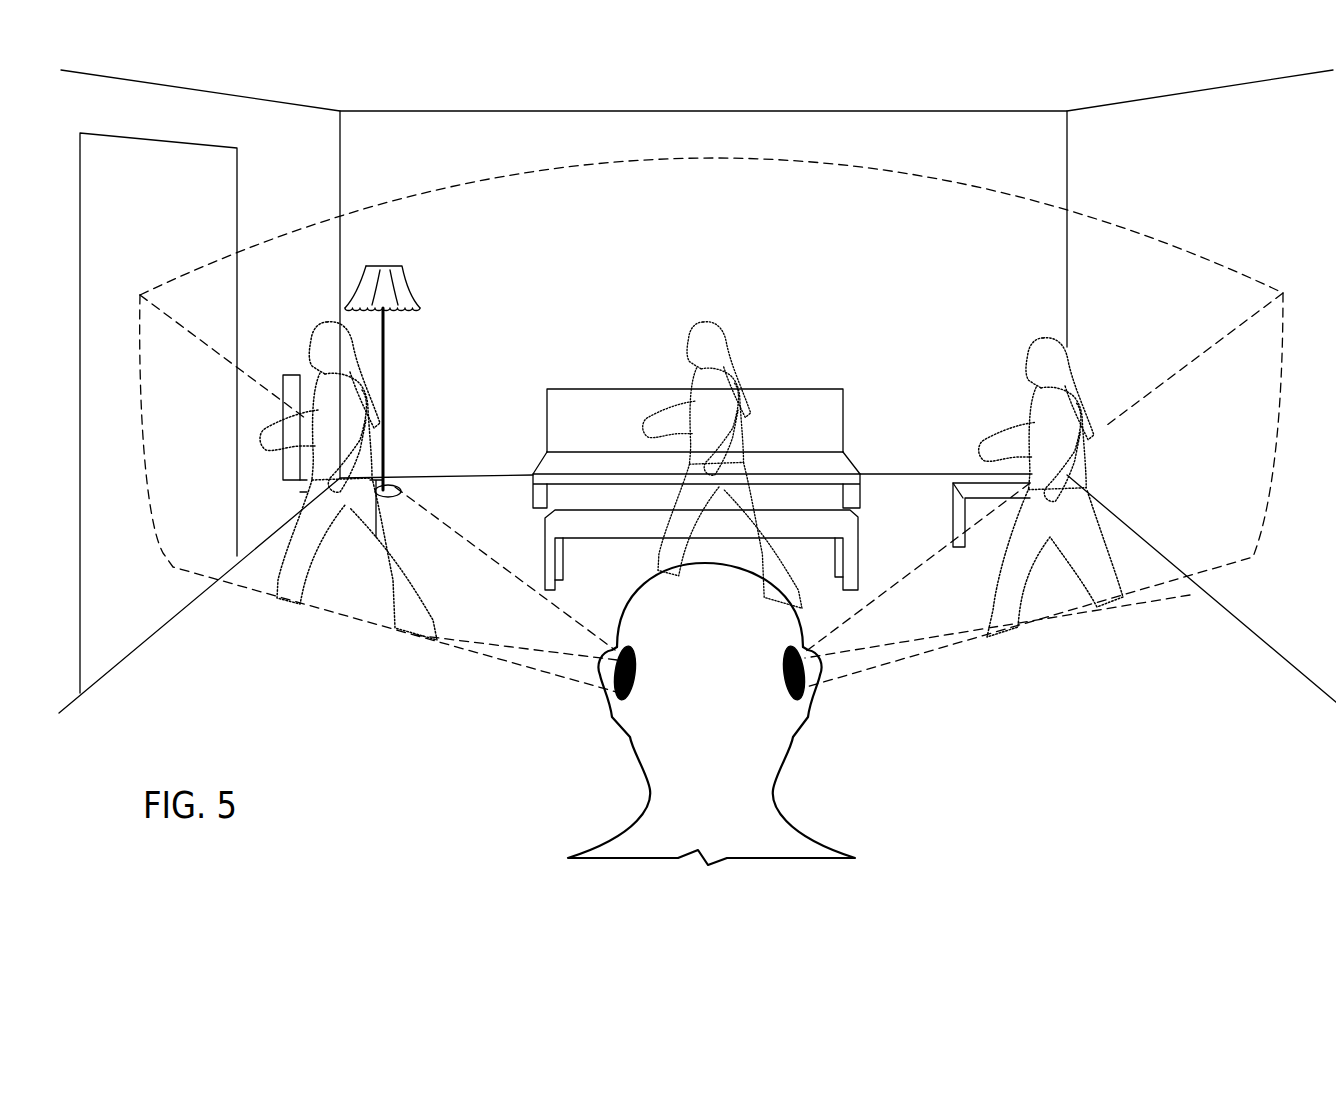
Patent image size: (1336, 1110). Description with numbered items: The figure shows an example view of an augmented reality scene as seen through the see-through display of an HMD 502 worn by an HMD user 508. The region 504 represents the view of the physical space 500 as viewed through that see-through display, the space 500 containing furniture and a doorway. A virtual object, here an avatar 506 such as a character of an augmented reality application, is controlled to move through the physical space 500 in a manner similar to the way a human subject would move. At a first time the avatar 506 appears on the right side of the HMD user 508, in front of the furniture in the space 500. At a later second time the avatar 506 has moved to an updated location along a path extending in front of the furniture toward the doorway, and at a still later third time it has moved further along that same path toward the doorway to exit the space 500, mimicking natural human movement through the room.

The physical space 500 is at (956, 105).
The HMD 502 is at (800, 680).
The region 504 is at (409, 194).
The avatar 506 is at (348, 436).
The HMD user 508 is at (718, 753).